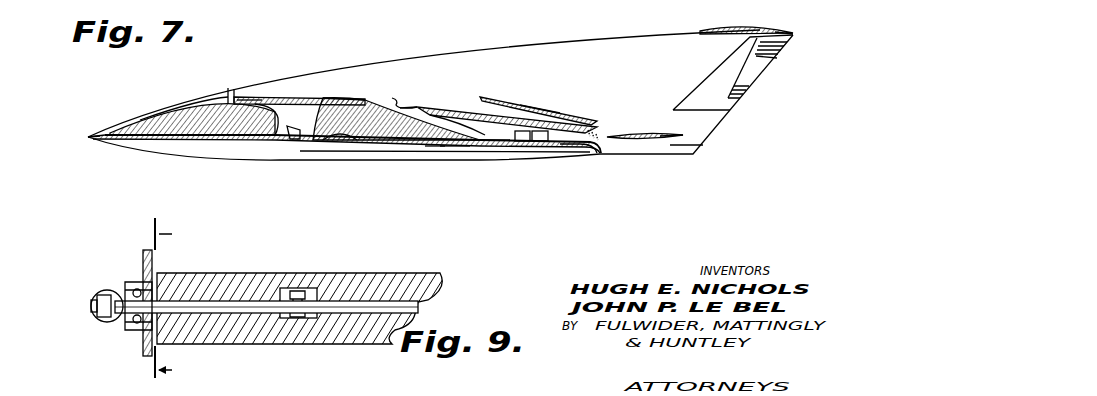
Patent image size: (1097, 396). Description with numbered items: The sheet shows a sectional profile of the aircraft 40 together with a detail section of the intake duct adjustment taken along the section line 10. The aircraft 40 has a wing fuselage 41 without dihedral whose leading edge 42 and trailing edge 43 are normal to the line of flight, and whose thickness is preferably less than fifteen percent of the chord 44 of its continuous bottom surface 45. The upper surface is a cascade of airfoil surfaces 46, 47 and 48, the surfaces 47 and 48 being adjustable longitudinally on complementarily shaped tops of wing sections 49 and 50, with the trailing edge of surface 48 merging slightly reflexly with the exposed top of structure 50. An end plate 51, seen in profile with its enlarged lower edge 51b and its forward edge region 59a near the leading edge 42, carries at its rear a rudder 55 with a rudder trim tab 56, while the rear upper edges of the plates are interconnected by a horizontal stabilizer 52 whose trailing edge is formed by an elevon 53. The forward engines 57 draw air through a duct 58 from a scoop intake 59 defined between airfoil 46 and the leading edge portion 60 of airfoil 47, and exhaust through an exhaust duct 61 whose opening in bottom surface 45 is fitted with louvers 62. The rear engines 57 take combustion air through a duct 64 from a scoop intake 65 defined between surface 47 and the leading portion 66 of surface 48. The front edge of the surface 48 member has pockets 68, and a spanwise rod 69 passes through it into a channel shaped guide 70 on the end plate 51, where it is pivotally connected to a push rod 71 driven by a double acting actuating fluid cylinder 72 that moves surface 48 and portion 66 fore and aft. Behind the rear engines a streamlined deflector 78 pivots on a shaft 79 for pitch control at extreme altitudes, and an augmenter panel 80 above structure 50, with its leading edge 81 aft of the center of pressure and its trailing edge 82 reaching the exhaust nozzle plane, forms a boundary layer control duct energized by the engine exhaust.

In FIG. 9, the section line 10- 10 is at (176, 299).
In FIG. 7, the aircraft 40 is at (250, 73).
In FIG. 7, the wing fuselage 41 is at (228, 128).
In FIG. 7, the leading edge 42 is at (92, 140).
In FIG. 7, the trailing edge 43 is at (598, 148).
In FIG. 7, the chord 44 is at (433, 150).
In FIG. 7, the continuous bottom surface 45 is at (460, 150).
In FIG. 7, the leading top airfoil surface 46 is at (174, 112).
In FIG. 7, the airfoil surface 47 is at (363, 102).
In FIG. 7, the airfoil surface 48 is at (455, 108).
In FIG. 7, the wing section 49 is at (363, 130).
In FIG. 7, the wing top structure 50 is at (480, 100).
In FIG. 7, the end plate 51 is at (424, 83).
In FIG. 9, the end plate 51 is at (142, 252).
In FIG. 7, the lower edge of end plate 51b is at (478, 162).
In FIG. 7, the horizontal stabilizer 52 is at (762, 30).
In FIG. 7, the elevon 53 is at (780, 33).
In FIG. 7, the rudder 55 is at (722, 105).
In FIG. 7, the rudder trim tab 56 is at (766, 64).
In FIG. 7, the engine 57 is at (298, 137).
In FIG. 7, the duct 58 is at (273, 128).
In FIG. 7, the scoop opening or intake 59 is at (229, 91).
In FIG. 7, the nose skin 59a is at (90, 136).
In FIG. 7, the leading edge portion 60 is at (237, 100).
In FIG. 7, the exhaust duct 61 is at (340, 142).
In FIG. 7, the louver 62 is at (312, 150).
In FIG. 7, the duct 64 is at (515, 141).
In FIG. 7, the scoop intake opening 65 is at (405, 106).
In FIG. 7, the leading edge portion 66 is at (413, 106).
In FIG. 9, the pocket 68 is at (318, 287).
In FIG. 9, the rod 69 is at (415, 311).
In FIG. 9, the guide 70 is at (160, 280).
In FIG. 9, the push rod 71 is at (96, 318).
In FIG. 9, the actuating fluid cylinder 72 is at (114, 292).
In FIG. 7, the streamlined deflector 78 is at (670, 138).
In FIG. 7, the shaft 79 is at (643, 140).
In FIG. 7, the augmenter panel 80 is at (530, 107).
In FIG. 7, the leading edge 81 is at (492, 98).
In FIG. 7, the trailing edge 82 is at (589, 124).